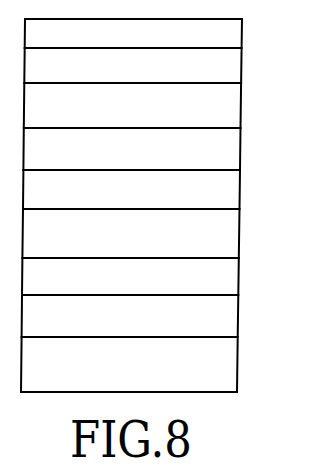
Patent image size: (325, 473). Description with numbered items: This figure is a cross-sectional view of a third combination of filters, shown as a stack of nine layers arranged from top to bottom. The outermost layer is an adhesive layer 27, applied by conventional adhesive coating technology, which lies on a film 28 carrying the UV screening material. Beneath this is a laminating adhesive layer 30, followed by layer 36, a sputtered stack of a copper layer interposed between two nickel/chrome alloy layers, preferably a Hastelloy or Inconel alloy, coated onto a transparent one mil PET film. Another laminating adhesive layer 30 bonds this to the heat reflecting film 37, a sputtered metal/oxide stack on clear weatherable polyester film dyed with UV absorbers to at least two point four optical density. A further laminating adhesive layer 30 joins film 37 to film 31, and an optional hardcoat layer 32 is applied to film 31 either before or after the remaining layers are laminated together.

The adhesive layer 27 is at (228, 44).
The UV screening film 28 is at (228, 75).
The laminating adhesive layer 30 is at (228, 119).
The nickel/chrome alloy-copper-nickel/chrome alloy stack 36 is at (228, 166).
The heat reflecting film 37 is at (228, 235).
The film 31 is at (228, 325).
The hardcoat layer 32 is at (228, 376).